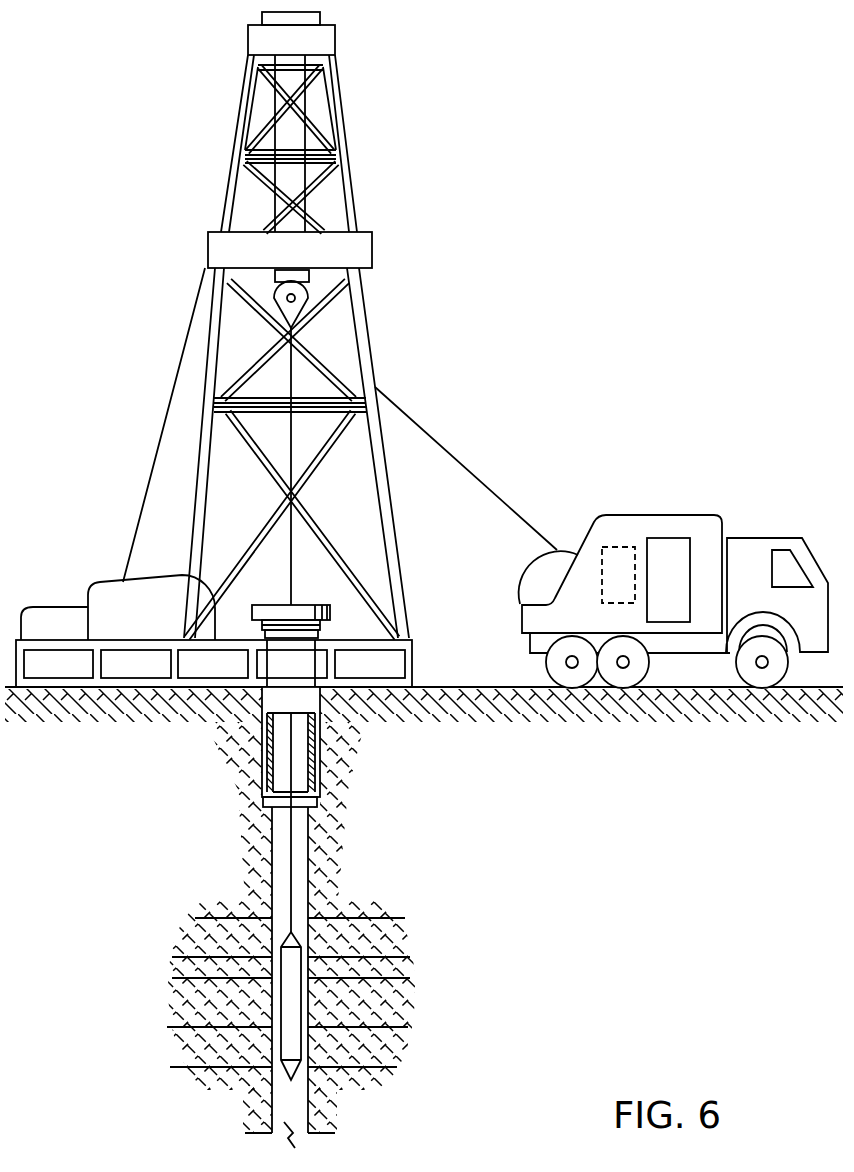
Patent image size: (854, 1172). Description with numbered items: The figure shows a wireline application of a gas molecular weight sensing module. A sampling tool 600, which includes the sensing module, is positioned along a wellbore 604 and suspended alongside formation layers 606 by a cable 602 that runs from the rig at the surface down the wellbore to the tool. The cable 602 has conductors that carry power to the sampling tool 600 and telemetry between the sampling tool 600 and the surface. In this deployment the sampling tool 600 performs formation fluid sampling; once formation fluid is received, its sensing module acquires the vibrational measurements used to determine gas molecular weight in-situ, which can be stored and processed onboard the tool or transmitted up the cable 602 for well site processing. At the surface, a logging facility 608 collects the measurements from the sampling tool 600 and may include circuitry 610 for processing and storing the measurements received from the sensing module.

The sampling tool 600 is at (280, 993).
The cable 602 is at (412, 419).
The wellbore 604 is at (312, 858).
The formation layers 606 is at (445, 917).
The logging facility 608 is at (688, 515).
The circuitry 610 is at (612, 547).